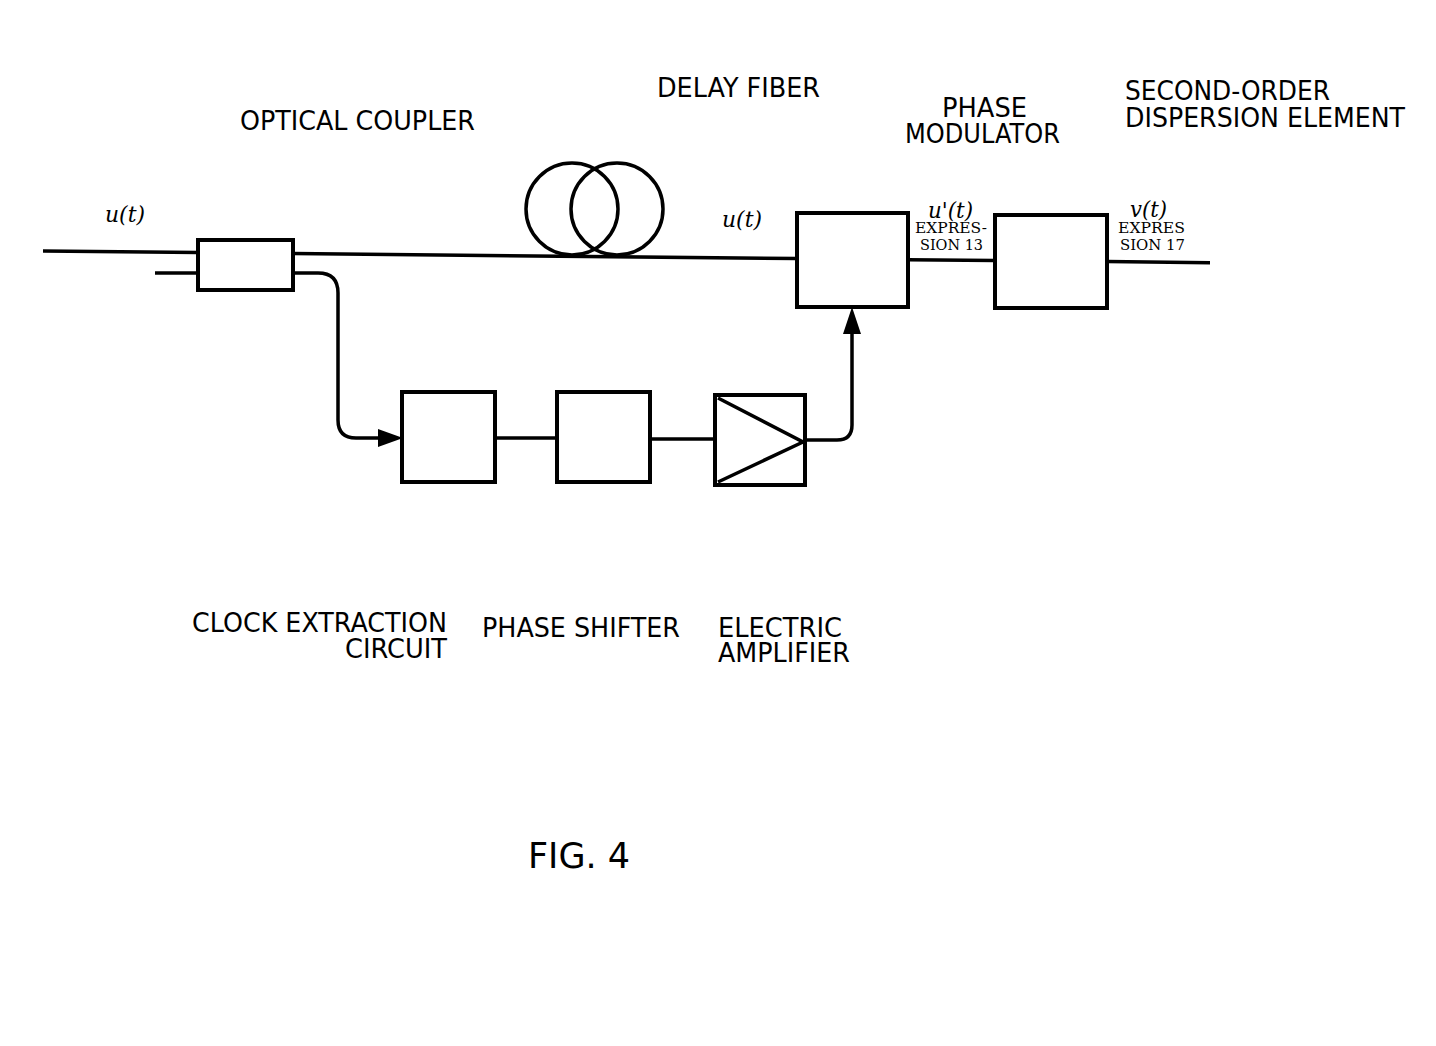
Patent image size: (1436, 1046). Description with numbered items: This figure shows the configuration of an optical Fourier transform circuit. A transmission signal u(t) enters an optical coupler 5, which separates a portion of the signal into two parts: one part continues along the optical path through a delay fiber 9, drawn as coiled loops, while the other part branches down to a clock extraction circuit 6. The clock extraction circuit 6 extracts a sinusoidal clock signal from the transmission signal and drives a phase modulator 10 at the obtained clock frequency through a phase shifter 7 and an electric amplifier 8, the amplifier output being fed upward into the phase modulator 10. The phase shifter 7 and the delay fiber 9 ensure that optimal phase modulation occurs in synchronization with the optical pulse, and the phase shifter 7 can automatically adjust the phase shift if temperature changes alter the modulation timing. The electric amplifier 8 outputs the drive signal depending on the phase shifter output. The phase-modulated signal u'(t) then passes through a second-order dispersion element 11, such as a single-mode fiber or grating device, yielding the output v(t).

The optical coupler 5 is at (245, 251).
The clock extraction circuit 6 is at (447, 458).
The phase shifter 7 is at (602, 462).
The electric amplifier 8 is at (760, 467).
The delay fiber 9 is at (583, 208).
The phase modulator 10 is at (852, 235).
The second-order dispersion element 11 is at (1050, 240).